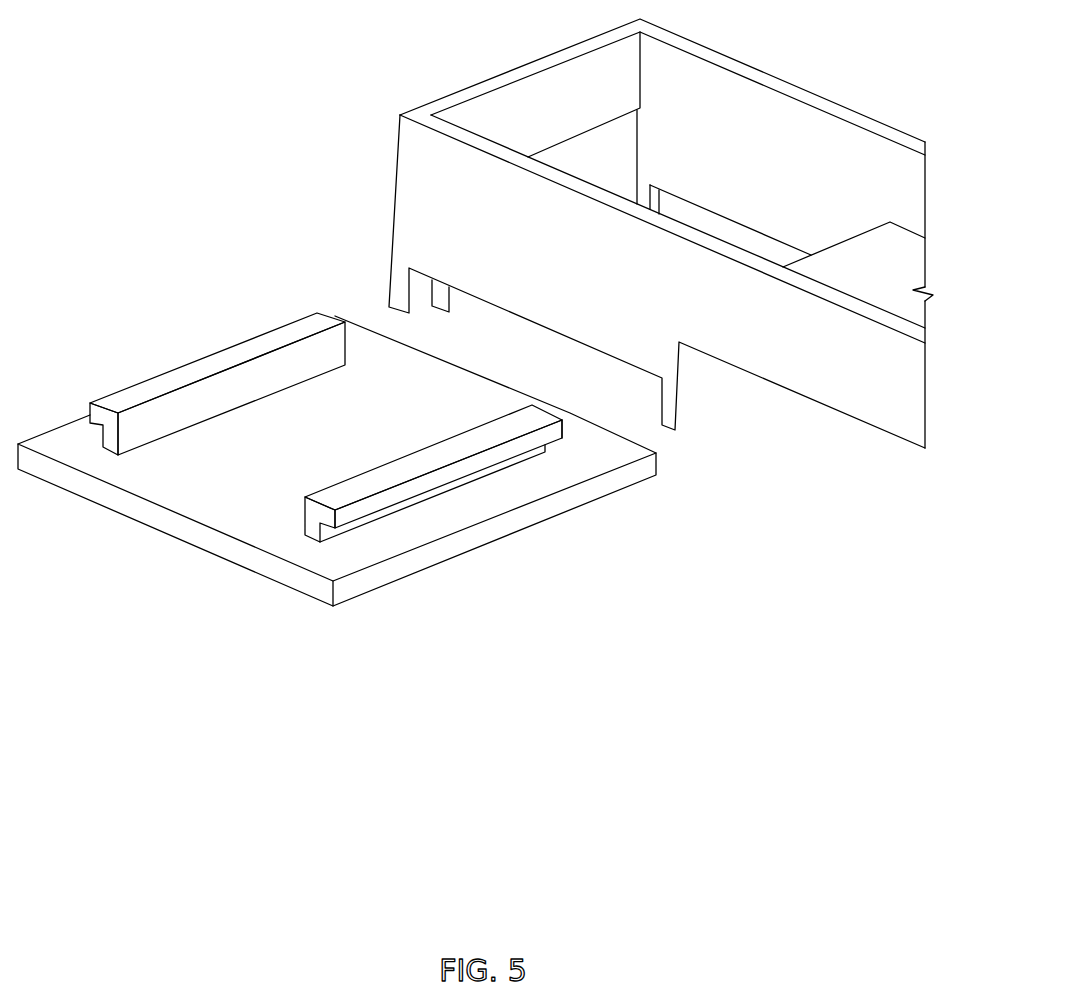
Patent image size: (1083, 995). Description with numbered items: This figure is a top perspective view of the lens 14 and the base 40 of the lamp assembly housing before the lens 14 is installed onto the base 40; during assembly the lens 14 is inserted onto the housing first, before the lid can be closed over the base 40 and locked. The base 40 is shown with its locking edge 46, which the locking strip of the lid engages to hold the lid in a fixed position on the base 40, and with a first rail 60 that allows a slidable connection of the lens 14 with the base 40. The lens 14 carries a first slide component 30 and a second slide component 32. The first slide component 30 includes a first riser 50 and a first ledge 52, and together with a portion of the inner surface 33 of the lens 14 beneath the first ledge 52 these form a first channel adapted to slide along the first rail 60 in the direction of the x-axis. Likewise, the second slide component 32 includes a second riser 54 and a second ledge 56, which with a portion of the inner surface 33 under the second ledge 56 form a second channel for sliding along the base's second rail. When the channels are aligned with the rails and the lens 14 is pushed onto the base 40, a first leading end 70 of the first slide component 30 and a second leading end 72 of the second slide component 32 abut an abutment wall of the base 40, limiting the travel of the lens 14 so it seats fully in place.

The lens 14 is at (337, 460).
The first slide component 30 is at (202, 369).
The second slide component 32 is at (427, 463).
The inner surface 33 is at (405, 388).
The base 40 is at (633, 233).
The locking edge 46 is at (560, 315).
The first riser 50 is at (152, 432).
The first ledge 52 is at (220, 360).
The second riser 54 is at (302, 505).
The second ledge 56 is at (432, 458).
The first rail 60 is at (443, 298).
The first leading end 70 is at (349, 337).
The second leading end 72 is at (548, 411).